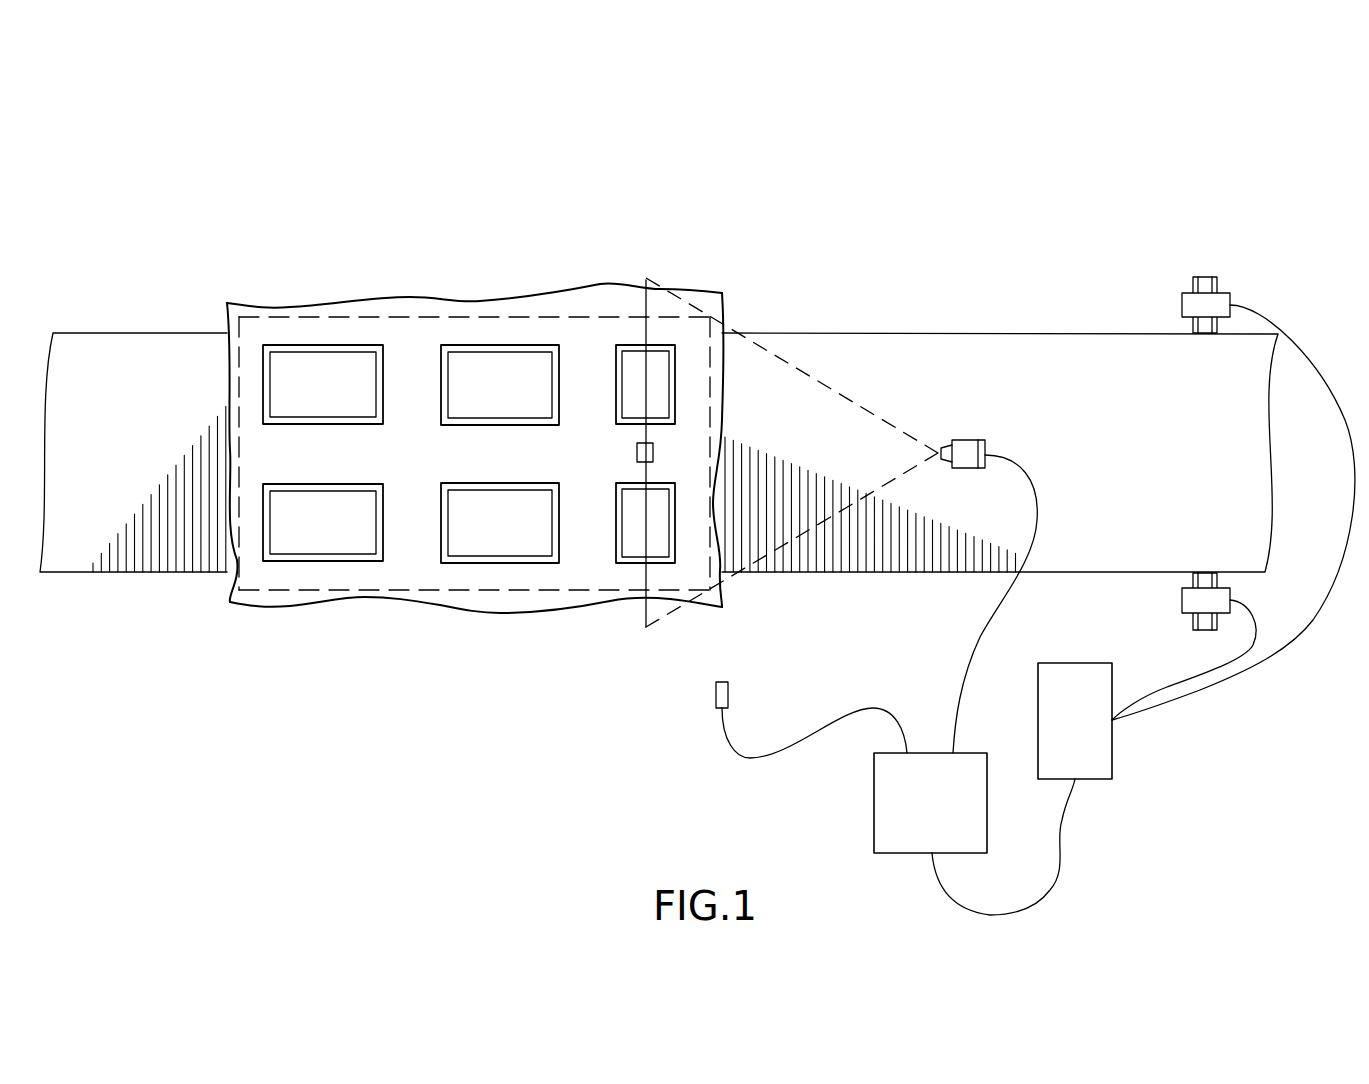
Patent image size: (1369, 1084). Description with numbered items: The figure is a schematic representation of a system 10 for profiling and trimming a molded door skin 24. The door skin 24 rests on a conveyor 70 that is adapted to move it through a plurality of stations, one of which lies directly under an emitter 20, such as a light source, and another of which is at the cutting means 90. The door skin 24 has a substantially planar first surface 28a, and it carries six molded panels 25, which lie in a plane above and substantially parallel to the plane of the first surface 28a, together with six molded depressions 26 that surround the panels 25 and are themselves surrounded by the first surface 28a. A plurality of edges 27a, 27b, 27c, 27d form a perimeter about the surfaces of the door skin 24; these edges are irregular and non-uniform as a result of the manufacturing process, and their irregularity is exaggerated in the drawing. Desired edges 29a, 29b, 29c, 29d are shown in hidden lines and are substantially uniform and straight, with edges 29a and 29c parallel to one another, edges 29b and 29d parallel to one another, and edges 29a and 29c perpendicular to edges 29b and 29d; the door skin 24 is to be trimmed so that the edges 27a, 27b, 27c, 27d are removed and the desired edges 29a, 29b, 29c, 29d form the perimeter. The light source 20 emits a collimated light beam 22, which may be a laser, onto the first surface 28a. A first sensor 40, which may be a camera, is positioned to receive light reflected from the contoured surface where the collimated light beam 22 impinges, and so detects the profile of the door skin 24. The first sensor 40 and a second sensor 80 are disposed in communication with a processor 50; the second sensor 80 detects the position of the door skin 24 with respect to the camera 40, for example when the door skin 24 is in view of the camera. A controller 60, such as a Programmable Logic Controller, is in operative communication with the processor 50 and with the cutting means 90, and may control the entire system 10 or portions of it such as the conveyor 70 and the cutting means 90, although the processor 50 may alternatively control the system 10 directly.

The system 10 is at (937, 174).
The emitter 20 is at (653, 452).
The collimated light beam 22 is at (641, 305).
The door skin 24 is at (485, 449).
The molded panels 25 is at (310, 378).
The molded depressions 26 is at (385, 370).
The edge 27a is at (722, 388).
The edge 27b is at (425, 607).
The edge 27c is at (227, 474).
The edge 27d is at (360, 298).
The first surface 28a is at (486, 438).
The desired edge 29a is at (723, 348).
The desired edge 29b is at (600, 592).
The desired edge 29c is at (239, 351).
The desired edge 29d is at (448, 317).
The first sensor 40 is at (970, 440).
The processor 50 is at (917, 820).
The controller 60 is at (1062, 738).
The conveyor 70 is at (70, 465).
The second sensor 80 is at (710, 698).
The cutting means 90 is at (1230, 325).